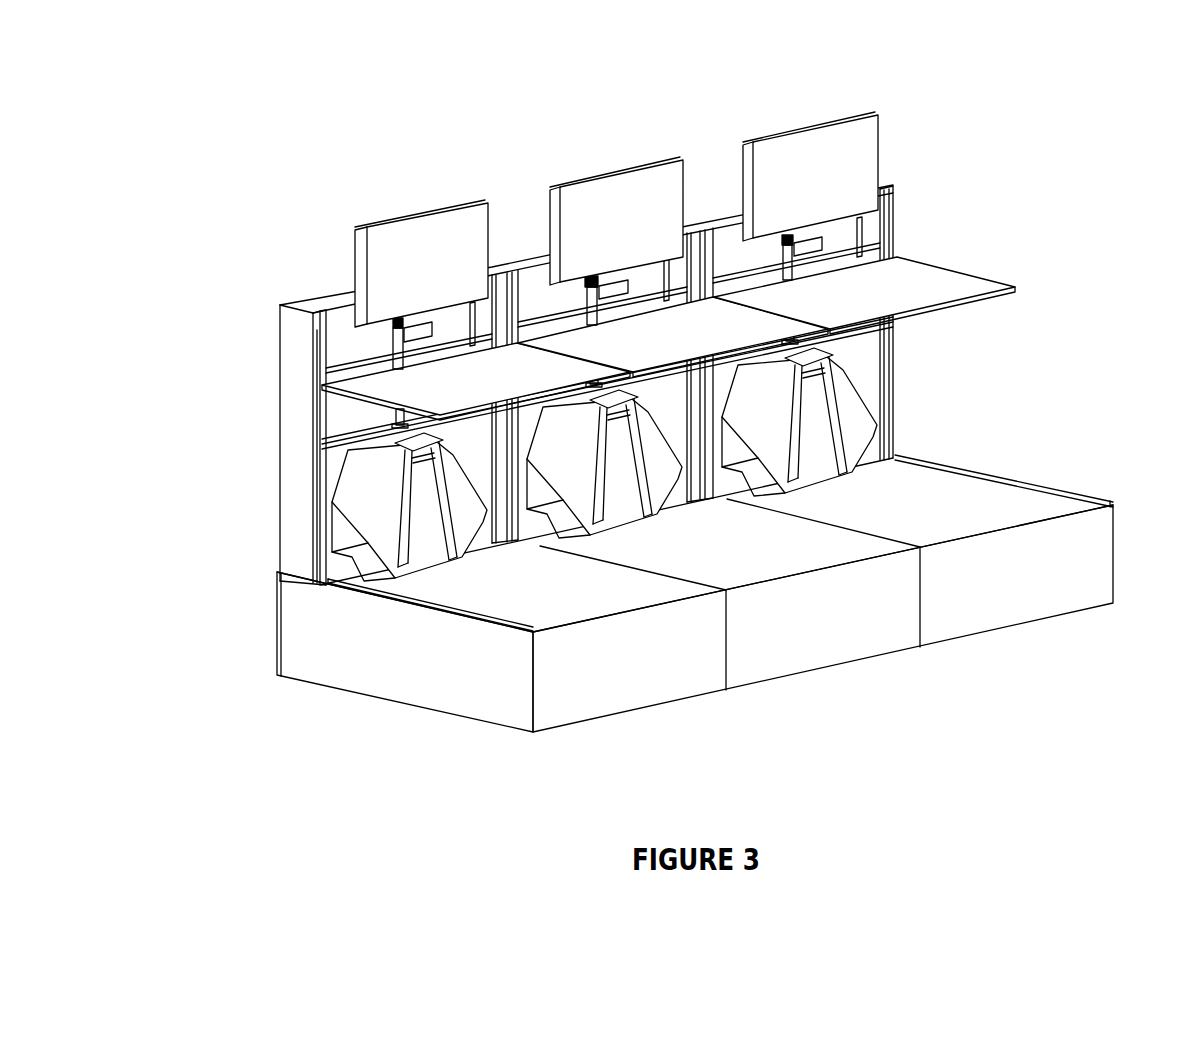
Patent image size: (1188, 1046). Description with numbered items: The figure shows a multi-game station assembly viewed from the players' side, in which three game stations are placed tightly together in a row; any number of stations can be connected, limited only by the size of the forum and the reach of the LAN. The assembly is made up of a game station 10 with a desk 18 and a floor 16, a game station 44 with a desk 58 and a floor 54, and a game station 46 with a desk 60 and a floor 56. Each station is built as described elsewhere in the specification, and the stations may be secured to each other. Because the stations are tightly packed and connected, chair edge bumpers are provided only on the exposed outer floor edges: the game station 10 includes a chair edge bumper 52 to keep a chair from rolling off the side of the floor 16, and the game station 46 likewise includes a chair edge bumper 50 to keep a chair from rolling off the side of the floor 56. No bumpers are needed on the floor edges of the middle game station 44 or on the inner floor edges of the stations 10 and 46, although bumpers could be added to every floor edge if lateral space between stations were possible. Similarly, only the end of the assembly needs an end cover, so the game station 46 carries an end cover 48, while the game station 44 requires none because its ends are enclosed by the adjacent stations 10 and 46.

The game station 10 is at (574, 336).
The floor 16 is at (708, 589).
The desk 18 is at (917, 288).
The game station 44 is at (521, 250).
The game station 46 is at (317, 292).
The end cover 48 is at (377, 635).
The chair edge bumper 50 is at (533, 628).
The chair edge bumper 52 is at (1068, 492).
The floor 54 is at (758, 555).
The floor 56 is at (585, 592).
The desk 58 is at (827, 388).
The desk 60 is at (427, 388).